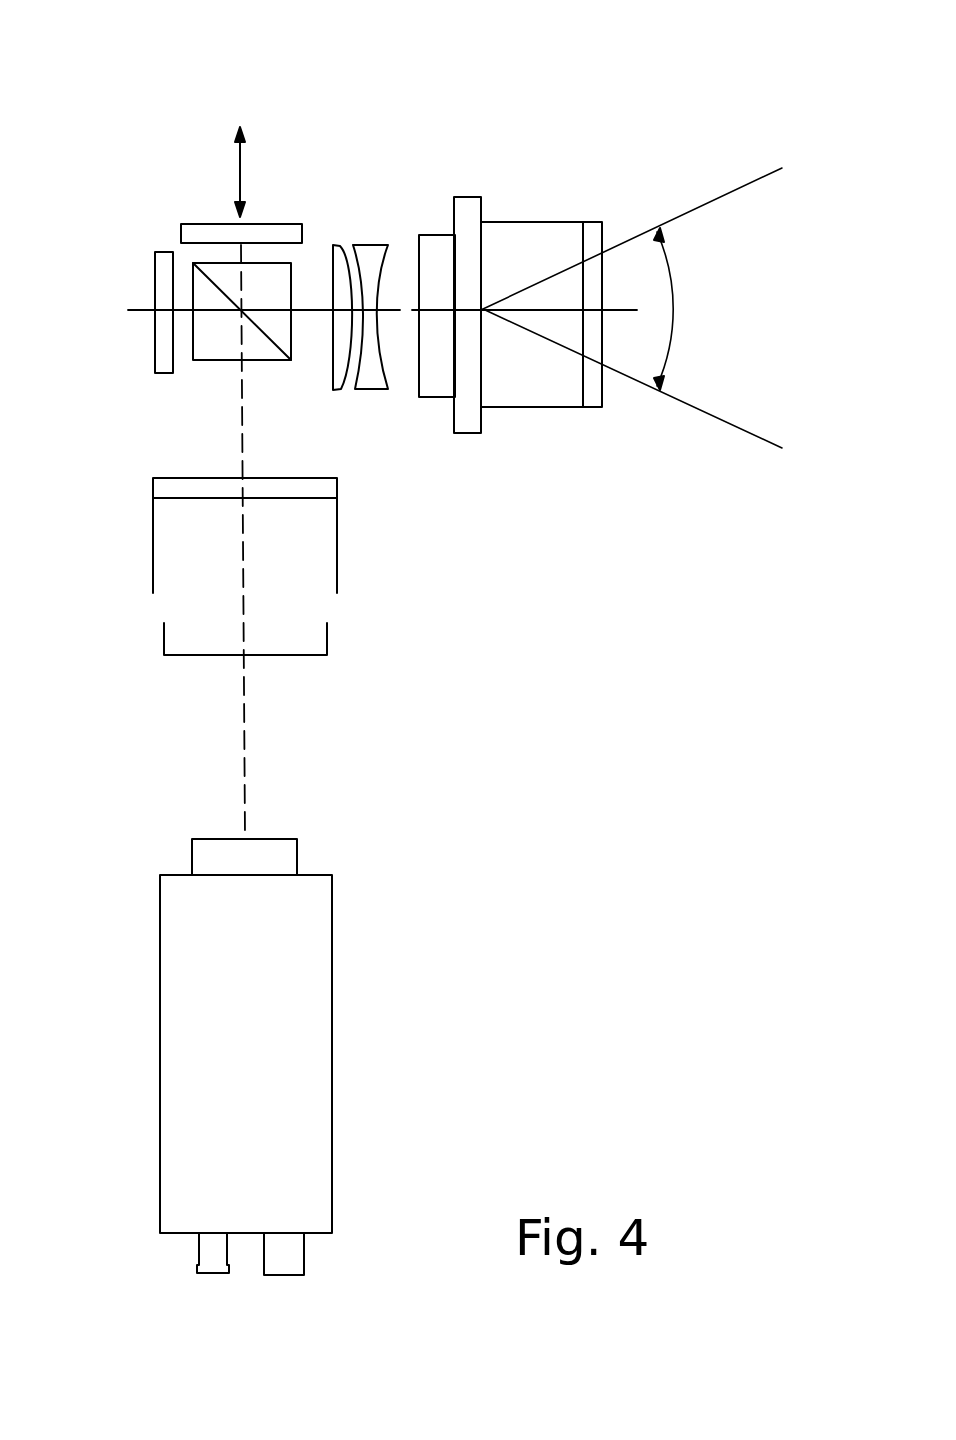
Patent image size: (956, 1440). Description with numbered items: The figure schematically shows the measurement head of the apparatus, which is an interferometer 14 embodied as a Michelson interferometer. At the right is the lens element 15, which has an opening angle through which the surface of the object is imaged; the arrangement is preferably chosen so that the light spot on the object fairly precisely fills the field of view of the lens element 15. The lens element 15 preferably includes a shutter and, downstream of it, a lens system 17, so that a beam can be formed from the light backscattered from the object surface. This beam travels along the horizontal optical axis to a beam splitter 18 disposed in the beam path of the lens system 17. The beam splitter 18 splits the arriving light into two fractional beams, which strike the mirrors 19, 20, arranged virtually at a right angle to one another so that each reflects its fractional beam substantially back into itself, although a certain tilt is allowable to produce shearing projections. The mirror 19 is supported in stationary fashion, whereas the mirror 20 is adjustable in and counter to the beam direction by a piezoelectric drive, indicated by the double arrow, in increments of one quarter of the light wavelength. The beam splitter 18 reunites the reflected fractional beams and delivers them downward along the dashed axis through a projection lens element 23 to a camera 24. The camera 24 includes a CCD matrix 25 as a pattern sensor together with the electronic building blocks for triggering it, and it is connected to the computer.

The interferometer 14 is at (346, 118).
The lens element 15 is at (538, 218).
The lens system 17 is at (381, 218).
The beam splitter 18 is at (210, 360).
The mirror 19 is at (155, 350).
The mirror 20 is at (192, 233).
The projection lens element 23 is at (337, 553).
The camera 24 is at (373, 952).
The CCD matrix 25 is at (297, 853).